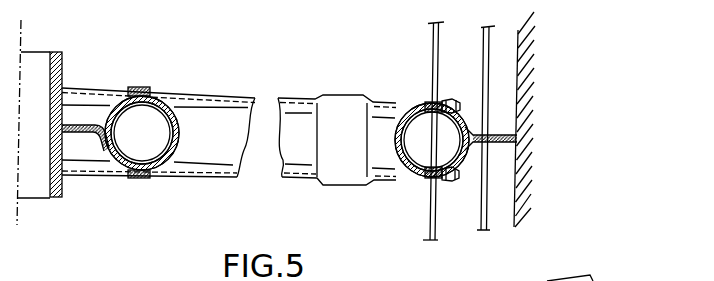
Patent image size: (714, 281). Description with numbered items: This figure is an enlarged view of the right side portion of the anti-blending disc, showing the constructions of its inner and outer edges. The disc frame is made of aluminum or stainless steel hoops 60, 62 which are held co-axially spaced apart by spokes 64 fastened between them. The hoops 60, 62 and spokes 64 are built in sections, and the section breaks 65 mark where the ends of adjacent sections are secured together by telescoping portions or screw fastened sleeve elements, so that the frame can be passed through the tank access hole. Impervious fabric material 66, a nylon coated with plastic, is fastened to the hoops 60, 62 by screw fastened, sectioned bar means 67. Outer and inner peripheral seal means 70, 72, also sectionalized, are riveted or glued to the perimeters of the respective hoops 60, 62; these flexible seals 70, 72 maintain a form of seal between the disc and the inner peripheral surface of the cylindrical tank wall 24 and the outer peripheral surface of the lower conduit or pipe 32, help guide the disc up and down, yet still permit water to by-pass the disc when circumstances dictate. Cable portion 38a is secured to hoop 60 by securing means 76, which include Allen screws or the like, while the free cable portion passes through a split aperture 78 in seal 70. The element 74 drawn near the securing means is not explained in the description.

The wall 24 is at (575, 123).
The mounting plate 32 is at (62, 60).
The rod end 38a is at (438, 241).
The ring 60 is at (393, 117).
The ring 62 is at (163, 95).
The tube 64 is at (210, 178).
The sleeve coupling 65 is at (339, 110).
The tube break 66 is at (281, 160).
The clamp 67 is at (140, 87).
The bracket 70 is at (503, 143).
The arm 72 is at (85, 134).
The nut 74 is at (452, 182).
The rod 76 is at (440, 100).
The rod 78 is at (489, 133).